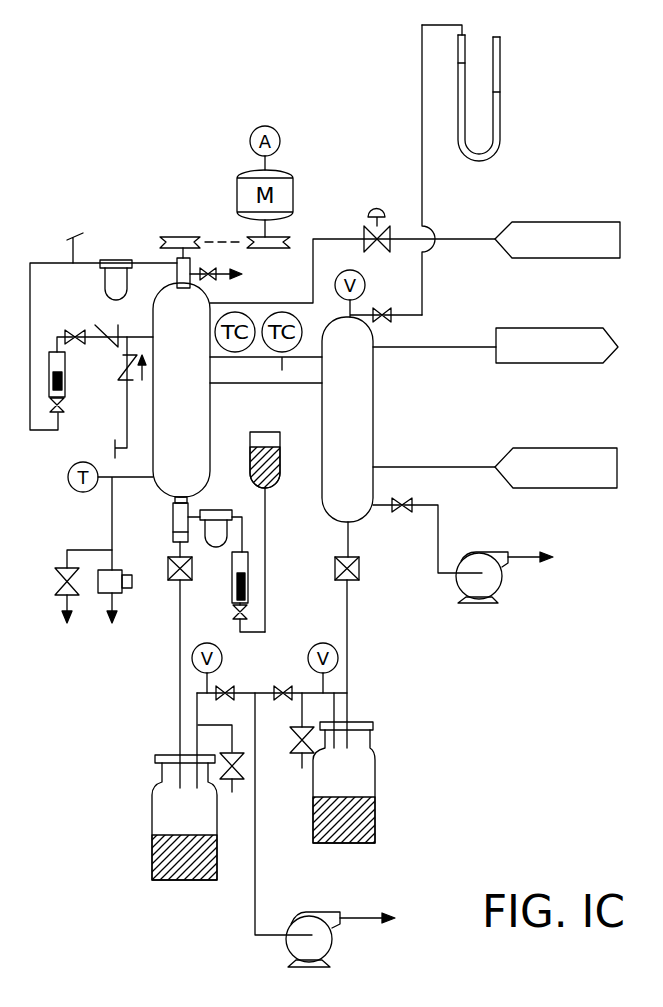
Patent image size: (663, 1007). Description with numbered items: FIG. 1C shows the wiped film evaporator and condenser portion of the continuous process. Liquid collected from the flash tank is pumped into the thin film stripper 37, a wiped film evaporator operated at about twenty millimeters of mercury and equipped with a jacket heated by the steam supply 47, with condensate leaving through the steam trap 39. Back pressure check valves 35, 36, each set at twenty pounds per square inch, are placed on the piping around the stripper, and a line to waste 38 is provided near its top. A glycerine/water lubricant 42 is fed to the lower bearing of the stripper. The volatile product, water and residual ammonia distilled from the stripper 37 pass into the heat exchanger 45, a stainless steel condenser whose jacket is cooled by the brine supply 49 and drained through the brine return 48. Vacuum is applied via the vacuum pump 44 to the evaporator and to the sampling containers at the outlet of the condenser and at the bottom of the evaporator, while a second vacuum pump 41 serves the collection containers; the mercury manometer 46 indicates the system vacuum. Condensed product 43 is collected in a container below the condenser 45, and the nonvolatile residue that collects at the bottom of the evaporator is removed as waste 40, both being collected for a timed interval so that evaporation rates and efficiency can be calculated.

The back pressure check valve 35 is at (88, 320).
The back pressure check valve 36 is at (114, 379).
The thin film stripper 37 is at (181, 390).
The line to waste 38 is at (238, 278).
The steam trap 39 is at (96, 604).
The waste 40 is at (184, 834).
The vacuum pump 41 is at (340, 955).
The glycerine/water lubricant 42 is at (320, 422).
The product 43 is at (344, 800).
The vacuum pump 44 is at (463, 568).
The heat exchanger 45 is at (347, 419).
The mercury manometer 46 is at (483, 93).
The steam supply 47 is at (557, 240).
The brine return 48 is at (495, 345).
The brine supply 49 is at (495, 468).